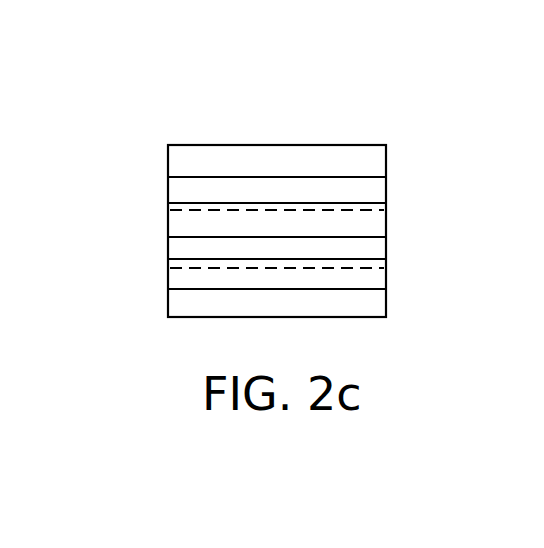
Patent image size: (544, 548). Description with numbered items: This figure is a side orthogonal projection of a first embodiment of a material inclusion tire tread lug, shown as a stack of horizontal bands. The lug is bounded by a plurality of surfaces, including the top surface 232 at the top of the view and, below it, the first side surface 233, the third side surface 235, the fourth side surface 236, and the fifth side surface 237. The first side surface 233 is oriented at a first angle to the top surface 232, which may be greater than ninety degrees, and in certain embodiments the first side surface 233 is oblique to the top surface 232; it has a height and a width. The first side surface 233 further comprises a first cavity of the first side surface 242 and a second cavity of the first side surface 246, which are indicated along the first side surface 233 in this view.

The top surface 232 is at (313, 141).
The first cavity of the first side surface 242 is at (392, 188).
The first side surface 233 is at (188, 219).
The fourth side surface 236 is at (395, 228).
The second cavity of the first side surface 246 is at (161, 242).
The third side surface 235 is at (162, 253).
The fifth side surface 237 is at (388, 305).